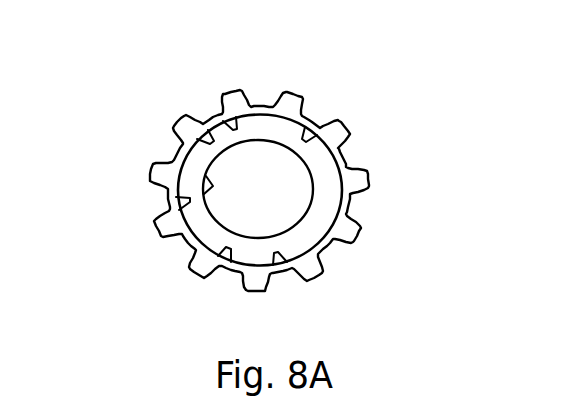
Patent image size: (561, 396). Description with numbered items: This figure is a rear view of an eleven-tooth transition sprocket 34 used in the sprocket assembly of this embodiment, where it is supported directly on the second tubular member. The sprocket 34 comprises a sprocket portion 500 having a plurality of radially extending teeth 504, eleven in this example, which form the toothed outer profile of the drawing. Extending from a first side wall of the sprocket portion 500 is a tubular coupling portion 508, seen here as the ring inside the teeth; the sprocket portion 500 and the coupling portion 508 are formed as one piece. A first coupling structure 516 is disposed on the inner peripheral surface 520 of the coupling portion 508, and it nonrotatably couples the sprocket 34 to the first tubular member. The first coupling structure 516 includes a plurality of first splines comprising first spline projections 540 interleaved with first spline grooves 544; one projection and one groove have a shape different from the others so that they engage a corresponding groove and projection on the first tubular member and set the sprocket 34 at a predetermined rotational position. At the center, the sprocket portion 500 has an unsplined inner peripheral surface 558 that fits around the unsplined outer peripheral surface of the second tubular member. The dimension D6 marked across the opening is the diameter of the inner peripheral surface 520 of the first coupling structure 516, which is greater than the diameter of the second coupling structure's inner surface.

The sprocket portion 500 is at (128, 193).
The first spline projections 540 is at (352, 210).
The tubular coupling portion 508 is at (180, 167).
The unsplined inner peripheral surface 558 is at (215, 197).
The diameter of inner peripheral surface of first coupling structure D6 is at (282, 122).
The teeth 504 is at (151, 165).
The sprocket 34 is at (380, 97).
The first coupling structure 516 is at (304, 152).
The first spline grooves 544 is at (325, 262).
The inner peripheral surface 520 is at (277, 253).